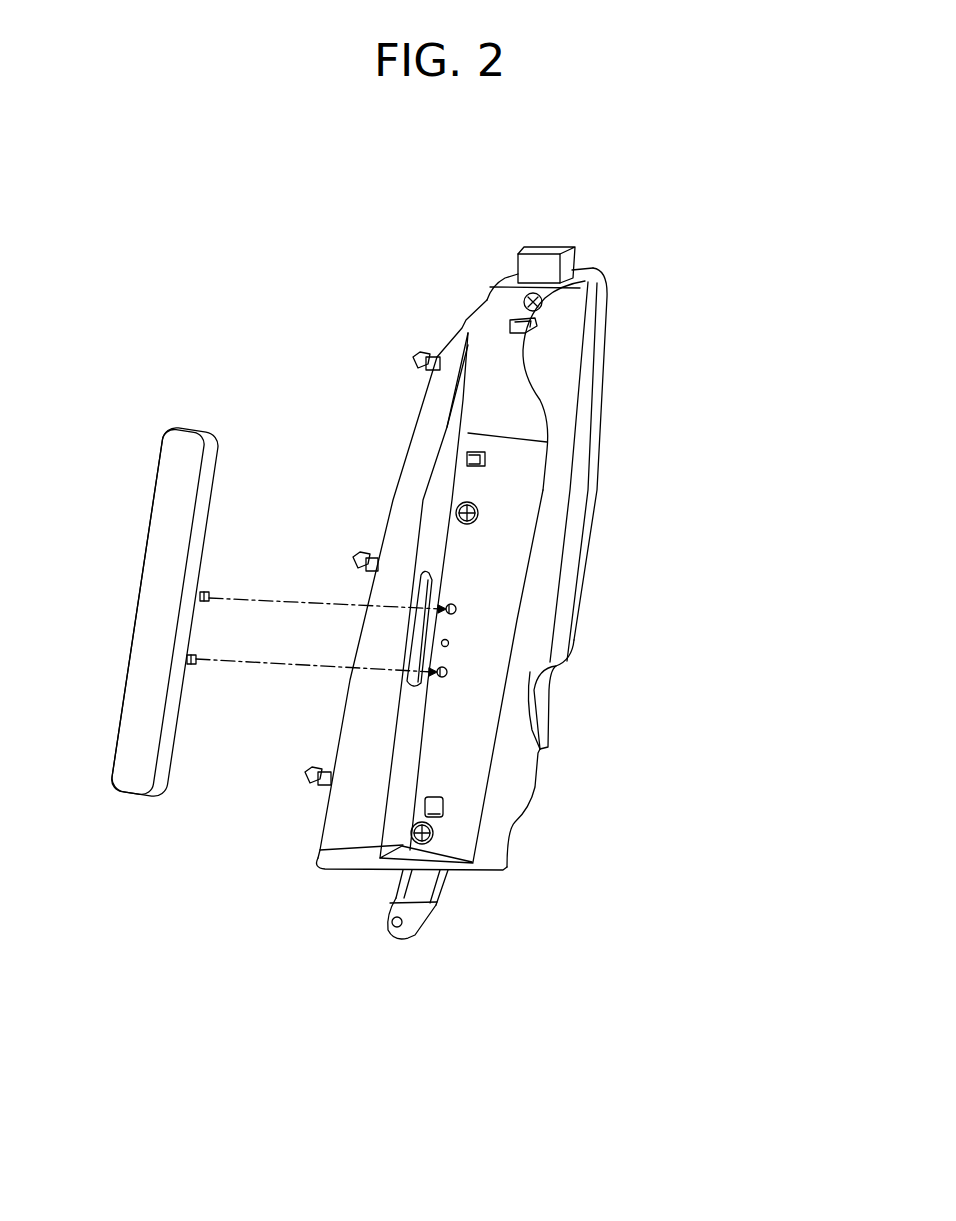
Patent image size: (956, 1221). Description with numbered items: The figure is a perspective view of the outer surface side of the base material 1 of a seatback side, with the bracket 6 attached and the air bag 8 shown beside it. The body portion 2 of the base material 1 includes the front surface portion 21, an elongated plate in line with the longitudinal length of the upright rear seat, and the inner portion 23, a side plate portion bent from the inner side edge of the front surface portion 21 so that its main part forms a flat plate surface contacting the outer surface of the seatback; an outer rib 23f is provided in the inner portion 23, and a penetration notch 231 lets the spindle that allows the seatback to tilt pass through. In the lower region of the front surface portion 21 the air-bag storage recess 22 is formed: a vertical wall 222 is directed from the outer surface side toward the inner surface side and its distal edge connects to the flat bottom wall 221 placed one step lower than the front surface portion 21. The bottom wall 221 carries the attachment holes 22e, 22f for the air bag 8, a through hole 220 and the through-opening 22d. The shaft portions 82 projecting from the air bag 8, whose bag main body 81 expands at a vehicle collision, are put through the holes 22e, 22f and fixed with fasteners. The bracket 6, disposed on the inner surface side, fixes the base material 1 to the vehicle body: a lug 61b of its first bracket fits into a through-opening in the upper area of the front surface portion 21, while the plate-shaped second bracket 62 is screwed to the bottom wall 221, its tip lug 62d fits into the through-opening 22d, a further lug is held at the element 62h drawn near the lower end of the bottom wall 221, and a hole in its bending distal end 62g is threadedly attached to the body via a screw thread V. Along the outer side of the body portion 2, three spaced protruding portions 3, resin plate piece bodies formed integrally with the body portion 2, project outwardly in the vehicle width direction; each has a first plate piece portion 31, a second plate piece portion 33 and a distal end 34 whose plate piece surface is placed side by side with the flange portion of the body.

The base material 1 is at (590, 237).
The body portion 2 is at (495, 532).
The front surface portion 21 is at (500, 305).
The air-bag storage recess 22 is at (495, 600).
The through hole 220 is at (415, 637).
The bottom wall 221 is at (455, 760).
The vertical wall 222 is at (430, 535).
The through-opening 22d is at (485, 460).
The attachment hole 22e is at (456, 608).
The attachment hole 22f is at (447, 670).
The inner portion 23 is at (560, 373).
The outer rib 23f is at (597, 417).
The penetration notch 231 is at (547, 693).
The protruding portion 3 is at (327, 568).
The first plate piece portion 31 is at (437, 357).
The second plate piece portion 33 is at (418, 372).
The distal end 34 is at (425, 357).
The screw thread V is at (545, 300).
The bracket 6 is at (430, 917).
The lug 61b is at (540, 328).
The second bracket 62 is at (473, 713).
The tip lug 62d is at (468, 456).
The bending distal end 62g is at (380, 907).
The clip 62h is at (443, 812).
The air bag 8 is at (152, 434).
The bag main body 81 is at (165, 561).
The shaft portions 82 is at (210, 590).